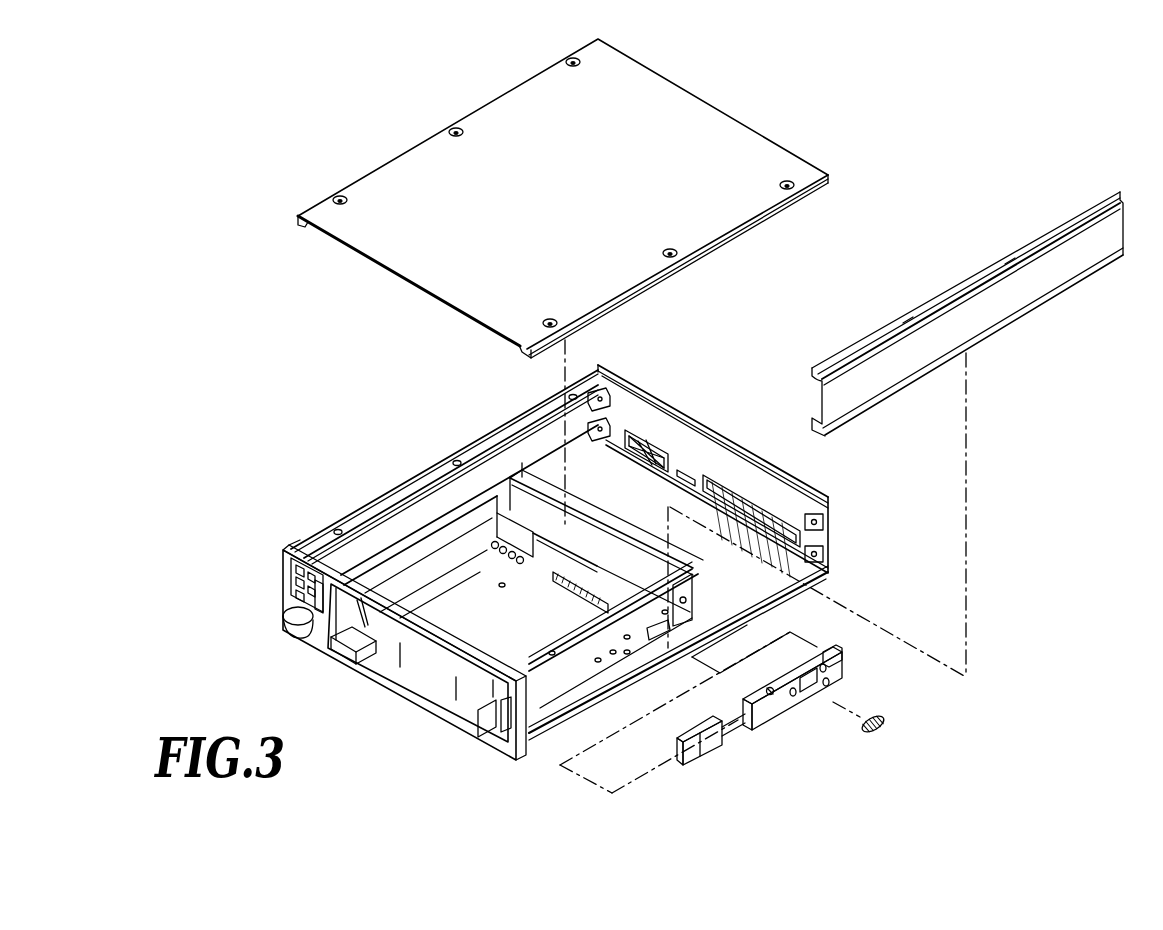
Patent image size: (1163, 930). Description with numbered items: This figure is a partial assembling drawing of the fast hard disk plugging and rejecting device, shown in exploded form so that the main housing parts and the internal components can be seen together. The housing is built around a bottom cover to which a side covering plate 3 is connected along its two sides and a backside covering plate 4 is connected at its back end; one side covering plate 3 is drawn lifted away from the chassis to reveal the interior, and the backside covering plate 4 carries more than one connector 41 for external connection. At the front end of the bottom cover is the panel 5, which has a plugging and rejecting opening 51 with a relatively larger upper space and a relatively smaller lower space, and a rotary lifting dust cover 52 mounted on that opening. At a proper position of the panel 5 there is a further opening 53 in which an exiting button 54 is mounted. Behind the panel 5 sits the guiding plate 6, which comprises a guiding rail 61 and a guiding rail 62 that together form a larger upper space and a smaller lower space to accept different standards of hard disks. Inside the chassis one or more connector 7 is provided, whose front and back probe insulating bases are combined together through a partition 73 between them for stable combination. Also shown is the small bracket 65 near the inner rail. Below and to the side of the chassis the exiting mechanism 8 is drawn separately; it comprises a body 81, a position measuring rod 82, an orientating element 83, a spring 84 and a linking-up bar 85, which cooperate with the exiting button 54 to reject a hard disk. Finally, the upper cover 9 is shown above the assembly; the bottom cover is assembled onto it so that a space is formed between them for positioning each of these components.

The side covering plate 3 is at (1125, 222).
The backside covering plate 4 is at (713, 465).
The connector 41 is at (740, 490).
The panel 5 is at (364, 634).
The plugging and rejecting opening 51 is at (342, 612).
The rotary lifting dust cover 52 is at (422, 667).
The opening 53 is at (505, 717).
The exiting button 54 is at (693, 728).
The guiding plate 6 is at (703, 603).
The guiding rail 61 is at (490, 563).
The guiding rail 62 is at (493, 623).
The bracket 65 is at (648, 632).
The connector 7 is at (572, 600).
The partition 73 is at (583, 523).
The exiting mechanism 8 is at (807, 699).
The body 81 is at (753, 697).
The position measuring rod 82 is at (843, 667).
The orientating element 83 is at (833, 680).
The spring 84 is at (883, 728).
The linking-up bar 85 is at (733, 720).
The upper cover 9 is at (357, 180).